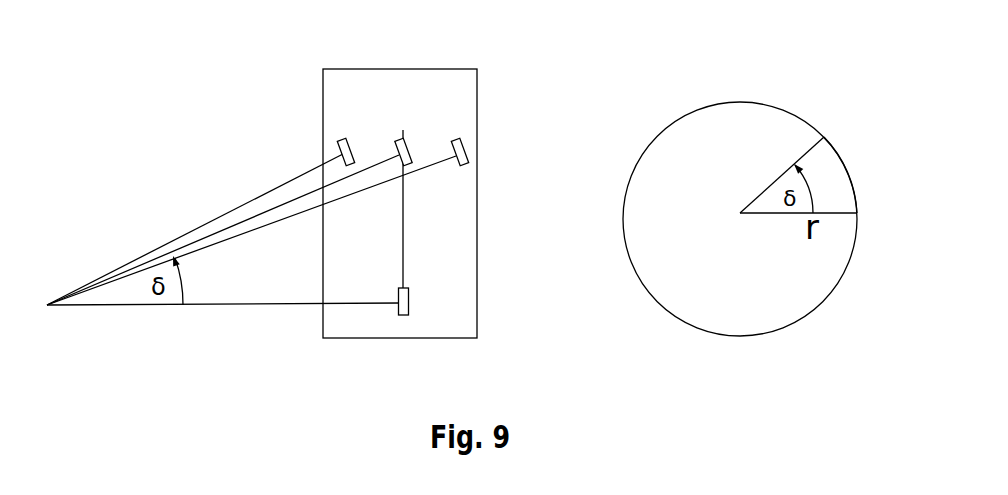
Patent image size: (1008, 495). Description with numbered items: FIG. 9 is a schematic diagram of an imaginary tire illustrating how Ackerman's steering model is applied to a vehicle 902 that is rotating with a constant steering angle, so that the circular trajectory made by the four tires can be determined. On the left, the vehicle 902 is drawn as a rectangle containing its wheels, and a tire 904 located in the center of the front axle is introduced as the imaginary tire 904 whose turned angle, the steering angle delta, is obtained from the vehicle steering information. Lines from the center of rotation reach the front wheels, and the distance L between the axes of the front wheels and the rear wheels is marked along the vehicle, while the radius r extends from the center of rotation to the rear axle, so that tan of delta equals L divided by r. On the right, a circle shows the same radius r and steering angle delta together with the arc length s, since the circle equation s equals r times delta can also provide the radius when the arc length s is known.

The vehicle 902 is at (323, 125).
The imaginary tire 904 is at (408, 146).
The distance between front and rear wheel axes L is at (415, 209).
The radius r is at (223, 322).
The arc length s is at (850, 175).